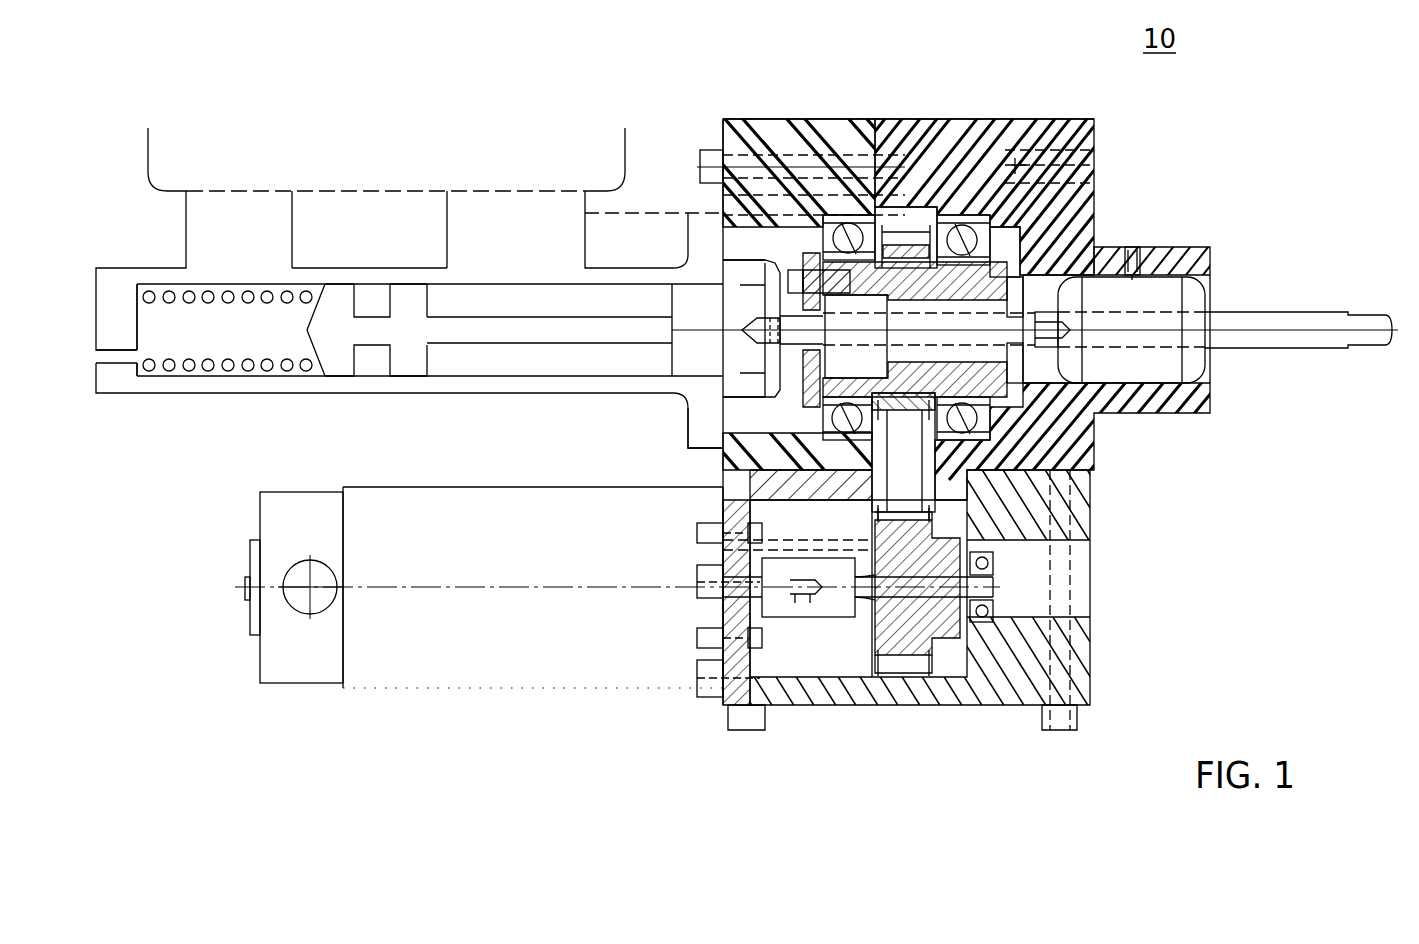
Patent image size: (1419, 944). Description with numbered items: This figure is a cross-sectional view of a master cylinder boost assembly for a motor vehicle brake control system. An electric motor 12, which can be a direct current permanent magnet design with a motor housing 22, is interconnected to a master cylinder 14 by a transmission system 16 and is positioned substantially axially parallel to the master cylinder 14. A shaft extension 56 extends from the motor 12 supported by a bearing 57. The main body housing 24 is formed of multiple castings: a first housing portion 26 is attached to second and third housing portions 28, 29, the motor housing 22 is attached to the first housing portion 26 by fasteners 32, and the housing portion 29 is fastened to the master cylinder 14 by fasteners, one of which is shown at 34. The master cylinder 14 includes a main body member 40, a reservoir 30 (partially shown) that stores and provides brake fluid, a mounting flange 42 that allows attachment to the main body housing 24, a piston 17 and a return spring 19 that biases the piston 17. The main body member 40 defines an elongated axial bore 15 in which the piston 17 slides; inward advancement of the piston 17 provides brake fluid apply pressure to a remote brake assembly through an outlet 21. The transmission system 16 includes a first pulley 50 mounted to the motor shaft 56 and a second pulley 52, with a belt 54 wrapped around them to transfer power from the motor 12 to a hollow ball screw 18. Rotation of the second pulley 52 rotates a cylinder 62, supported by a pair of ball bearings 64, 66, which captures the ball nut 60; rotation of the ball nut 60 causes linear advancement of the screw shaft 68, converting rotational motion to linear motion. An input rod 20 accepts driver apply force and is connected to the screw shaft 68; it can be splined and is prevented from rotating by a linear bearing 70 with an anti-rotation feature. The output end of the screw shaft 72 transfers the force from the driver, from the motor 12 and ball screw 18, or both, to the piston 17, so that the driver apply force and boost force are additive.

The electric motor 12 is at (566, 668).
The master cylinder 14 is at (536, 400).
The bore 15 is at (258, 368).
The transmission system 16 is at (954, 519).
The piston 17 is at (340, 366).
The ball screw 18 is at (1018, 297).
The return spring 19 is at (190, 366).
The input rod 20 is at (1235, 318).
The outlet 21 is at (94, 352).
The motor housing 22 is at (610, 690).
The main body housing 24 is at (984, 114).
The first housing portion 26 is at (1085, 670).
The second housing portion 28 is at (1082, 127).
The third housing portion 29 is at (848, 119).
The reservoir 30 is at (620, 158).
The fasteners 32 is at (700, 642).
The fastener 34 is at (700, 150).
The main body member 40 is at (600, 386).
The mounting flange 42 is at (690, 422).
The first pulley 50 is at (955, 640).
The second pulley 52 is at (936, 246).
The belt 54 is at (910, 478).
The motor shaft 56 is at (843, 614).
The bearing 57 is at (995, 606).
The ball nut 60 is at (810, 400).
The cylinder 62 is at (1007, 262).
The ball bearing 64 is at (823, 237).
The ball bearing 66 is at (990, 412).
The screw shaft 68 is at (992, 318).
The linear bearing 70 is at (1170, 300).
The output end of the screw shaft 72 is at (758, 326).